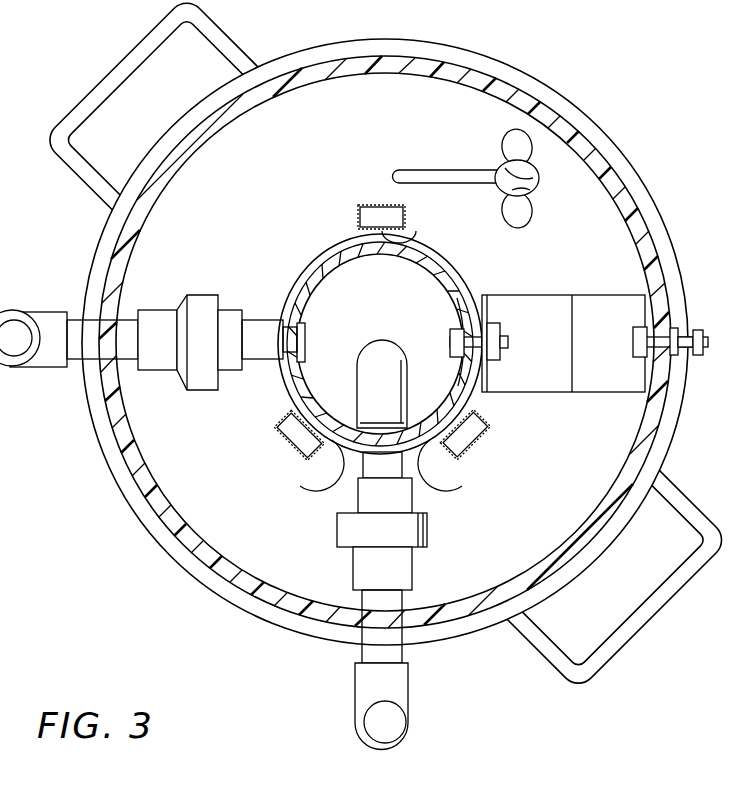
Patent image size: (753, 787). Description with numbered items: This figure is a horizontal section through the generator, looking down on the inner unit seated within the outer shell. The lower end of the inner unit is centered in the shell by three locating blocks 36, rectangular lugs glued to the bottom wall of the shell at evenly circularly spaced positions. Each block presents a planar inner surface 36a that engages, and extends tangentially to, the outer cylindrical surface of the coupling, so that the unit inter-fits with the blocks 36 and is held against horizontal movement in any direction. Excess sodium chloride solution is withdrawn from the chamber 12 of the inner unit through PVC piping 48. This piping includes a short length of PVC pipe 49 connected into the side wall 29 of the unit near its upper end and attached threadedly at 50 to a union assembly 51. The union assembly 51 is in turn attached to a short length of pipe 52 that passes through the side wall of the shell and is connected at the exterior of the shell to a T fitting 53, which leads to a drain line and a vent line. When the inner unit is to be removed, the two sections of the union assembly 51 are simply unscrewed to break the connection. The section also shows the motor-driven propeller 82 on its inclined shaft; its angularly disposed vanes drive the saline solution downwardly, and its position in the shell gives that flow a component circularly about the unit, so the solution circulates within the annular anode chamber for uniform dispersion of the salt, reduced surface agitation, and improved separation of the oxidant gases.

The chamber 12 is at (384, 359).
The side wall 29 is at (447, 274).
The locating blocks 36 is at (378, 205).
The planar inner surfaces 36a is at (400, 241).
The PVC piping 48 is at (152, 368).
The PVC pipe 49 is at (258, 322).
The threaded attachment 50 is at (265, 374).
The union assembly 51 is at (185, 304).
The pipe 52 is at (82, 342).
The T fitting 53 is at (30, 313).
The propeller 82 is at (507, 165).